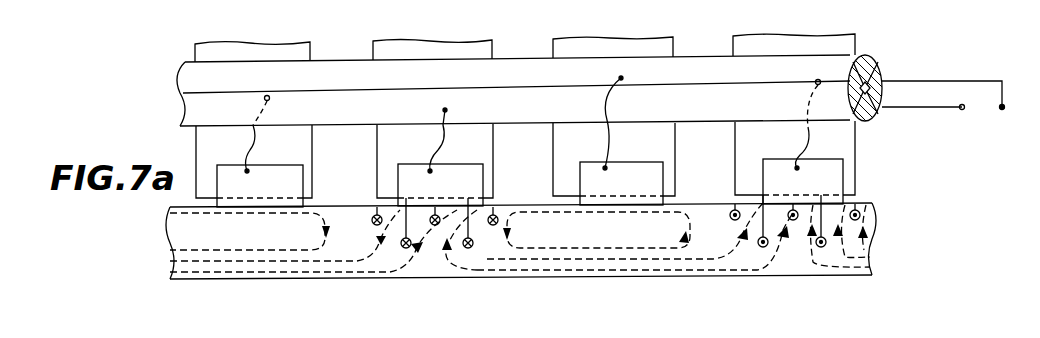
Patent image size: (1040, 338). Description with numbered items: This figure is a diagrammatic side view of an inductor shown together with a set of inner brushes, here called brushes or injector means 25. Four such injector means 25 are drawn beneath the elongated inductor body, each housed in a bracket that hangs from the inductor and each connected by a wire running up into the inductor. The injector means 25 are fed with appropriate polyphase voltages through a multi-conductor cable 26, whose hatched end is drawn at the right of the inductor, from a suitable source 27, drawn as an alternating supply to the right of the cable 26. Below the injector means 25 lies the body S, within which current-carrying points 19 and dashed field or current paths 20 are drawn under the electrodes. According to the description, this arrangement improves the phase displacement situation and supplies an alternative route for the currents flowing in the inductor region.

The injector means 25 is at (350, 163).
The multi-conductor cable 26 is at (886, 61).
The source 27 is at (1002, 113).
The conductor 19 is at (466, 250).
The field lines 20 is at (563, 250).
The substrate S is at (886, 195).